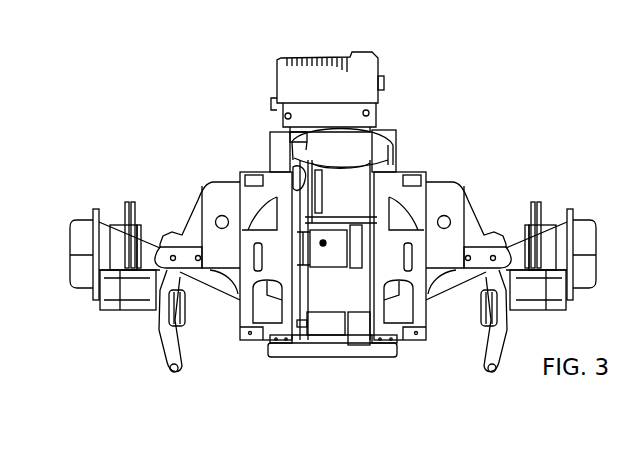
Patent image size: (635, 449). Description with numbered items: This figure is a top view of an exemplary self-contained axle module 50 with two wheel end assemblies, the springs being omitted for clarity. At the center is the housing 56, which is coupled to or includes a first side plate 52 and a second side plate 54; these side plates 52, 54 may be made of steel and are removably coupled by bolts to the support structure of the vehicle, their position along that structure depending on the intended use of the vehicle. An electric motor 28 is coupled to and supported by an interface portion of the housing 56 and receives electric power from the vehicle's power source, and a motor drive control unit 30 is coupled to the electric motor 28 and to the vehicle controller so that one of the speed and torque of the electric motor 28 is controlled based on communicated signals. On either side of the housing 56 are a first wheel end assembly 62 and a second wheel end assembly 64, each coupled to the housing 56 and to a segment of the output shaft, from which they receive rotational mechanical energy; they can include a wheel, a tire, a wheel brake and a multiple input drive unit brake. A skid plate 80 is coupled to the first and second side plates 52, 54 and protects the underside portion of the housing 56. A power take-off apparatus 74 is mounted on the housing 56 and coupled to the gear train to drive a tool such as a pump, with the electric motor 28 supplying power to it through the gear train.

The electric motor 28 is at (397, 143).
The motor drive control unit 30 is at (378, 57).
The self-contained axle module 50 is at (527, 107).
The first side plate 52 is at (250, 337).
The second side plate 54 is at (422, 338).
The housing 56 is at (325, 300).
The first wheel end assembly 62 is at (125, 323).
The second wheel end assembly 64 is at (560, 200).
The power take-off apparatus 74 is at (360, 240).
The skid plate 80 is at (362, 357).